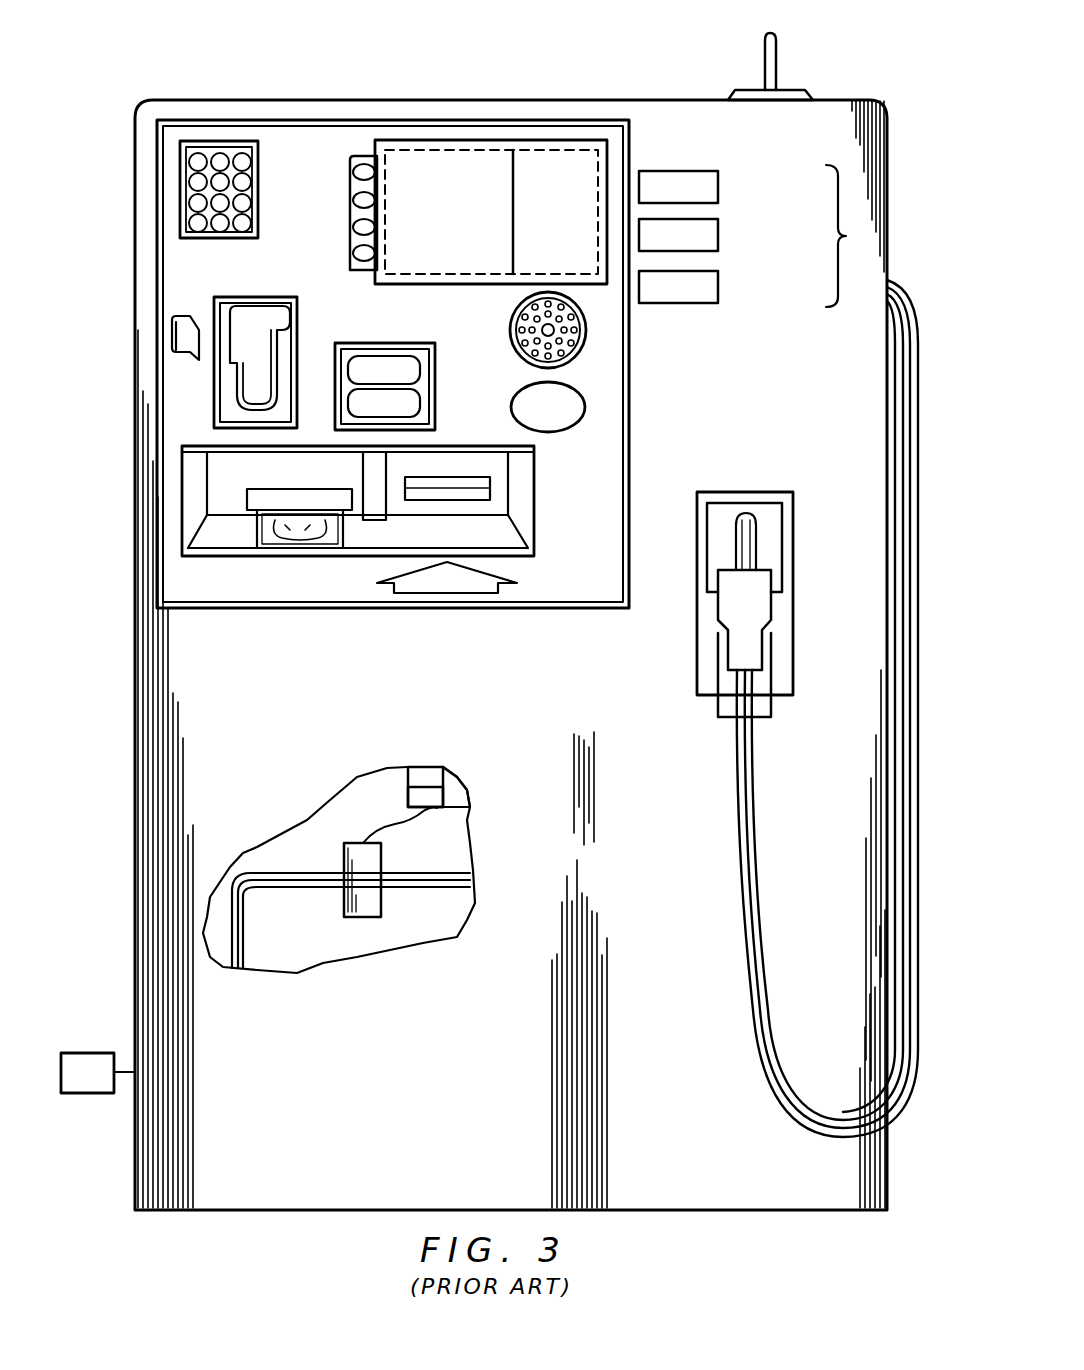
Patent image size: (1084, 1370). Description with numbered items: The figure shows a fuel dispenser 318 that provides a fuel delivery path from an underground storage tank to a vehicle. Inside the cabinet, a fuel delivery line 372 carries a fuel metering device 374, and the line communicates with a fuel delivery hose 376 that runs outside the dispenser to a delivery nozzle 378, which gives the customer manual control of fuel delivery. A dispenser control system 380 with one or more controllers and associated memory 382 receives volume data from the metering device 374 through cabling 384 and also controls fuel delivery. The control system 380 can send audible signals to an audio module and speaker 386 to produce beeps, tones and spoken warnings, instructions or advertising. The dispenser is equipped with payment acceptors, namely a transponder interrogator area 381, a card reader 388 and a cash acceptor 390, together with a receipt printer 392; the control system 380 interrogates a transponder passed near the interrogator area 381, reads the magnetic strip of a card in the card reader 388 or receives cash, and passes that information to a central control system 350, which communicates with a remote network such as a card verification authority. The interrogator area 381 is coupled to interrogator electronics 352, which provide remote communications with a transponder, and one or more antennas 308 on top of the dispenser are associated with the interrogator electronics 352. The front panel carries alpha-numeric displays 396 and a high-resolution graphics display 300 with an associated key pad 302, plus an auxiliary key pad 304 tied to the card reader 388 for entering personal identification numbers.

The graphics display 300 is at (478, 140).
The key pad 302 is at (365, 156).
The auxiliary key pad 304 is at (203, 160).
The antenna 308 is at (780, 60).
The fuel dispenser 318 is at (654, 55).
The central control system 350 is at (92, 1097).
The interrogator electronics 352 is at (458, 789).
The fuel delivery line 372 is at (303, 886).
The fuel metering device 374 is at (374, 900).
The fuel delivery hose 376 is at (823, 1128).
The delivery nozzle 378 is at (774, 612).
The dispenser control system 380 is at (408, 800).
The transponder interrogator area 381 is at (567, 418).
The memory 382 is at (428, 772).
The cabling 384 is at (406, 823).
The speaker 386 is at (510, 330).
The card reader 388 is at (252, 308).
The cash acceptor 390 is at (283, 495).
The receipt printer 392 is at (458, 486).
The alpha-numeric displays 396 is at (762, 236).